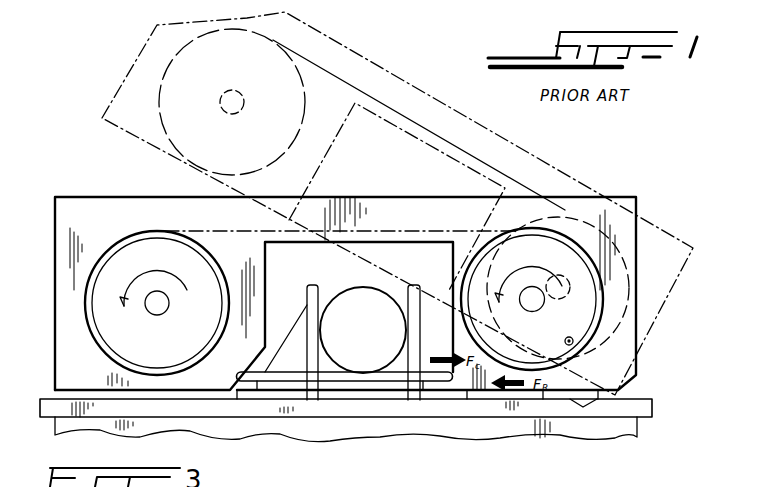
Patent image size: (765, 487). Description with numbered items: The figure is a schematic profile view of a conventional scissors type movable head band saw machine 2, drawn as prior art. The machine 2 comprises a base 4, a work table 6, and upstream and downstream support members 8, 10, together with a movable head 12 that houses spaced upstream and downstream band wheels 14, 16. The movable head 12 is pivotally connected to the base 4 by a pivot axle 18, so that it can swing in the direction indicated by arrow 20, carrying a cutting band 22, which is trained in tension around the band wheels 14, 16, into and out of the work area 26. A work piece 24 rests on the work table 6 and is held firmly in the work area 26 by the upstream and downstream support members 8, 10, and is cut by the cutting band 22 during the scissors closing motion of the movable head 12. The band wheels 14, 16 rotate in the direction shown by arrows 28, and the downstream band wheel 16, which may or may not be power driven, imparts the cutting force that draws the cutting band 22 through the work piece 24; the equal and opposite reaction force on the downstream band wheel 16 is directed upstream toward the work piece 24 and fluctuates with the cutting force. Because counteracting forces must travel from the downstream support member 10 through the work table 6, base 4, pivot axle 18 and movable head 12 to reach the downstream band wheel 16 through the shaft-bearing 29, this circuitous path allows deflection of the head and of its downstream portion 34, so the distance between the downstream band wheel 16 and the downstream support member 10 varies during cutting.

The scissors type movable head band saw machine 2 is at (637, 181).
The base 4 is at (637, 427).
The work table 6 is at (653, 404).
The upstream support member 8 is at (312, 287).
The downstream support member 10 is at (413, 287).
The movable head 12 is at (126, 197).
The upstream band wheel 14 is at (107, 296).
The downstream band wheel 16 is at (583, 307).
The pivot axle 18 is at (574, 346).
The arrow 20 is at (137, 23).
The cutting band 22 is at (265, 370).
The work piece 24 is at (368, 305).
The work area 26 is at (426, 272).
The arrows 28 is at (341, 276).
The shaft-bearing 29 is at (543, 307).
The downstream portion of movable head 34 is at (593, 207).